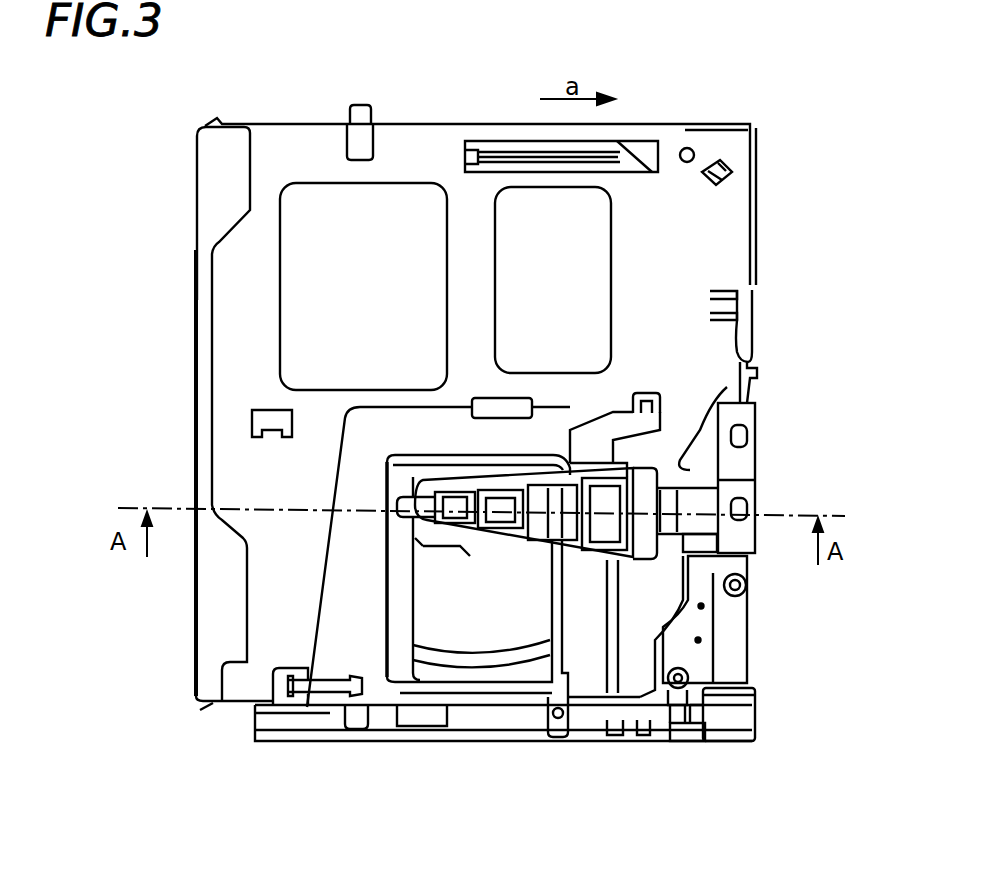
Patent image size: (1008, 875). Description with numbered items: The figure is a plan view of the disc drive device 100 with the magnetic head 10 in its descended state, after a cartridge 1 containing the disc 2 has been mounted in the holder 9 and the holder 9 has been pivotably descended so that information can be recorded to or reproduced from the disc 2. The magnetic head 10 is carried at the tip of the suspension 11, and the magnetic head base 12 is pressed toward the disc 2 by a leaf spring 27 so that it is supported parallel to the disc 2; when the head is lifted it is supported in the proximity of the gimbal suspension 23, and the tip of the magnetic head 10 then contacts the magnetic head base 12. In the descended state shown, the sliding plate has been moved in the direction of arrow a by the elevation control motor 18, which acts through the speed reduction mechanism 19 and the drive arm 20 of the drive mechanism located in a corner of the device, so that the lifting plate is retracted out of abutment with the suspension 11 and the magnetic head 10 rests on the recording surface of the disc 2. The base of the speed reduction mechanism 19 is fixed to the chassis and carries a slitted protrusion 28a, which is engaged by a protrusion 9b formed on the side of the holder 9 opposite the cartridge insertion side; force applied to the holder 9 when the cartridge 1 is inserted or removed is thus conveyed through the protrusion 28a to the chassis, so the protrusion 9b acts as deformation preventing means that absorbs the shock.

The disc drive device 100 is at (512, 68).
The cartridge 1 is at (222, 178).
The disc 2 is at (458, 585).
The holder 9 is at (295, 152).
The protrusion 9b is at (668, 710).
The magnetic head 10 is at (447, 497).
The suspension 11 is at (643, 476).
The magnetic head base 12 is at (410, 493).
The elevation control motor 18 is at (735, 702).
The speed reduction mechanism 19 is at (730, 640).
The drive arm 20 is at (693, 703).
The gimbal suspension 23 is at (462, 548).
The leaf spring 27 is at (668, 497).
The protrusion 28a is at (683, 705).